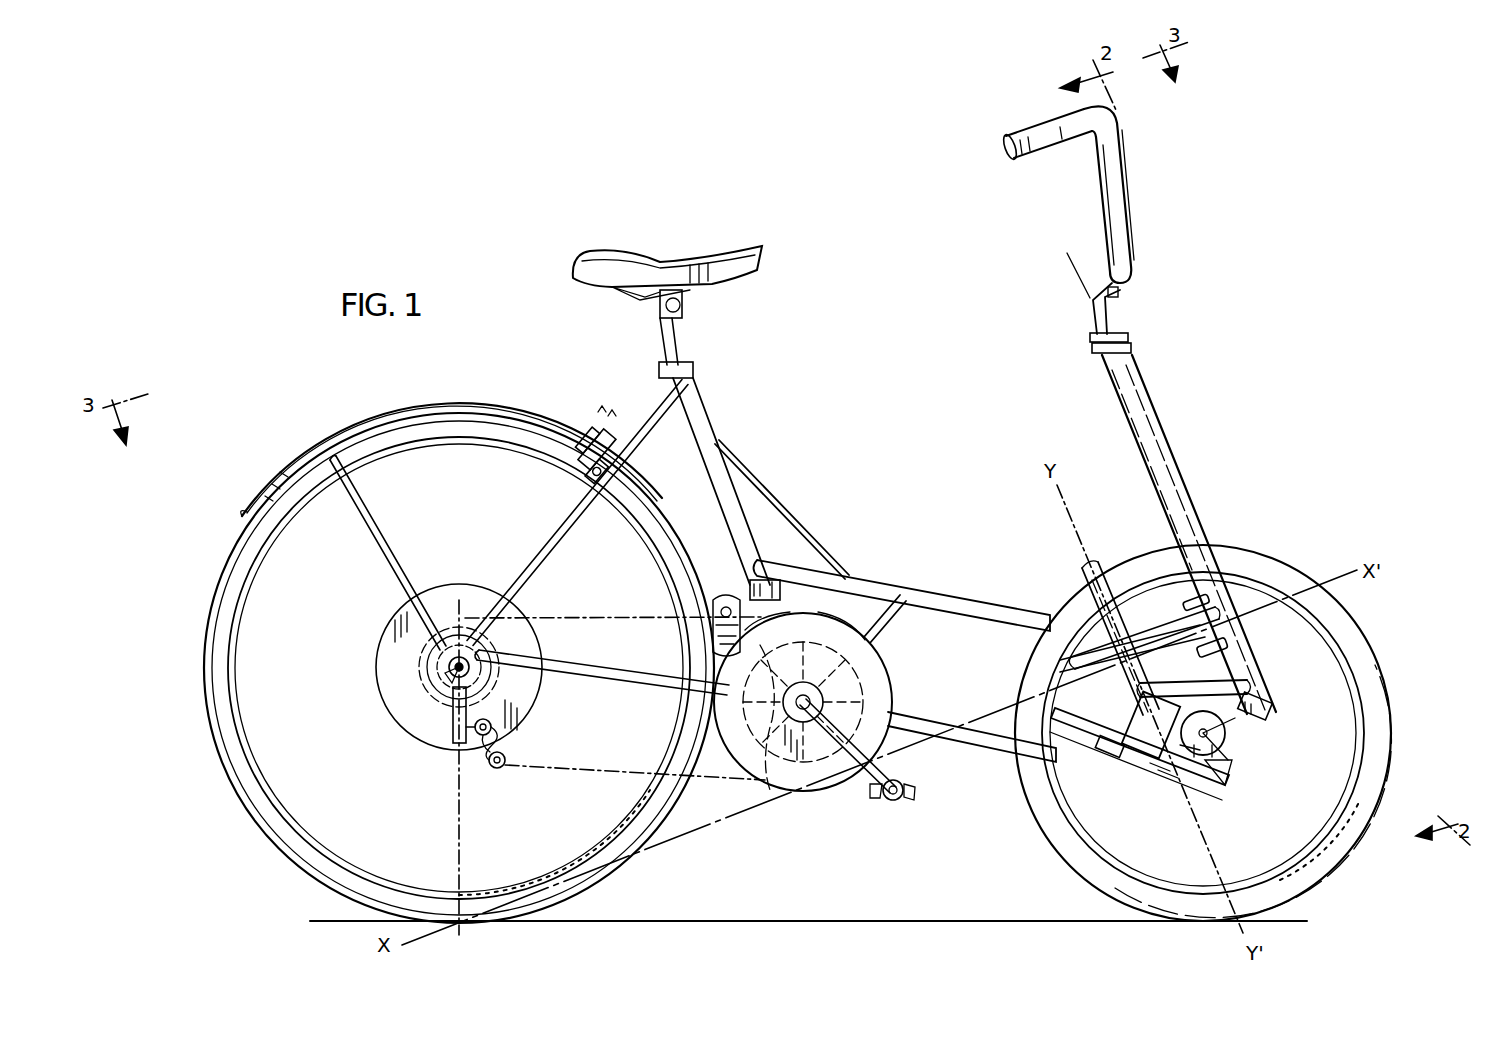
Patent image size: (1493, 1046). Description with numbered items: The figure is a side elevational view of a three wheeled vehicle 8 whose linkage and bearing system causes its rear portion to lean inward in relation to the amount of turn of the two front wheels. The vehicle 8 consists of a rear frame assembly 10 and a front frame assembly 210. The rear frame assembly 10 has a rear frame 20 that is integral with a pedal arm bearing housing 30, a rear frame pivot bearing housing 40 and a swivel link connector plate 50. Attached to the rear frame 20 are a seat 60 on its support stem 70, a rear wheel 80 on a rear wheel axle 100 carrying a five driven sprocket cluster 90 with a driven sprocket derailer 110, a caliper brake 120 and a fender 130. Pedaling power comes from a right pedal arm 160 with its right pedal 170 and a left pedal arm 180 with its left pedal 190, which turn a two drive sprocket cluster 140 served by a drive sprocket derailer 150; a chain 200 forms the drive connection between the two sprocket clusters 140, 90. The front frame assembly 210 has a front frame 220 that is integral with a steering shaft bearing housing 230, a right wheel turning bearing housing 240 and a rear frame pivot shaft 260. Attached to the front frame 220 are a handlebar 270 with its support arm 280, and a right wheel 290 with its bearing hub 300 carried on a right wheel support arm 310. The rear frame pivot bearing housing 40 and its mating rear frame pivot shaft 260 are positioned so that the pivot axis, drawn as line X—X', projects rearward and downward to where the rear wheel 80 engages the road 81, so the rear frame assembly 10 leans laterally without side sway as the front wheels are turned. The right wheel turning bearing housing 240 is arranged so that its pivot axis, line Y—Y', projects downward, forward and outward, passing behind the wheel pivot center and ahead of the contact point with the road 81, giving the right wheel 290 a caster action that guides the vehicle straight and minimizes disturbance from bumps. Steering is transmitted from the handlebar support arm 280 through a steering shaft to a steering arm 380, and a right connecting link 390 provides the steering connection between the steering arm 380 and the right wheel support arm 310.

The vehicle 8 is at (877, 270).
The rear frame assembly 10 is at (783, 480).
The rear frame 20 is at (968, 598).
The pedal arm bearing housing 30 is at (800, 793).
The rear frame pivot bearing housing 40 is at (1070, 624).
The swivel link connector plate 50 is at (1228, 749).
The seat 60 is at (676, 250).
The support stem 70 is at (684, 341).
The rear wheel 80 is at (213, 736).
The road 81 is at (885, 920).
The five driven sprocket cluster 90 is at (397, 662).
The rear wheel axle 100 is at (446, 680).
The driven sprocket derailer 110 is at (494, 768).
The caliper brake 120 is at (598, 432).
The fender 130 is at (447, 403).
The two drive sprocket cluster 140 is at (887, 667).
The drive sprocket derailer 150 is at (780, 598).
The right pedal arm 160 is at (886, 773).
The right pedal 170 is at (911, 799).
The left pedal arm 180 is at (714, 630).
The left pedal 190 is at (727, 598).
The chain 200 is at (740, 784).
The front frame assembly 210 is at (1262, 543).
The front frame 220 is at (1190, 600).
The steering shaft bearing housing 230 is at (1152, 406).
The right wheel turning bearing housing 240 is at (1165, 620).
The rear frame pivot shaft 260 is at (1092, 584).
The handlebar 270 is at (1129, 210).
The support arm 280 is at (1108, 316).
The right wheel 290 is at (1388, 662).
The bearing hub 300 is at (1207, 758).
The right wheel support arm 310 is at (1152, 764).
The steering arm 380 is at (1274, 710).
The right connecting link 390 is at (1100, 752).